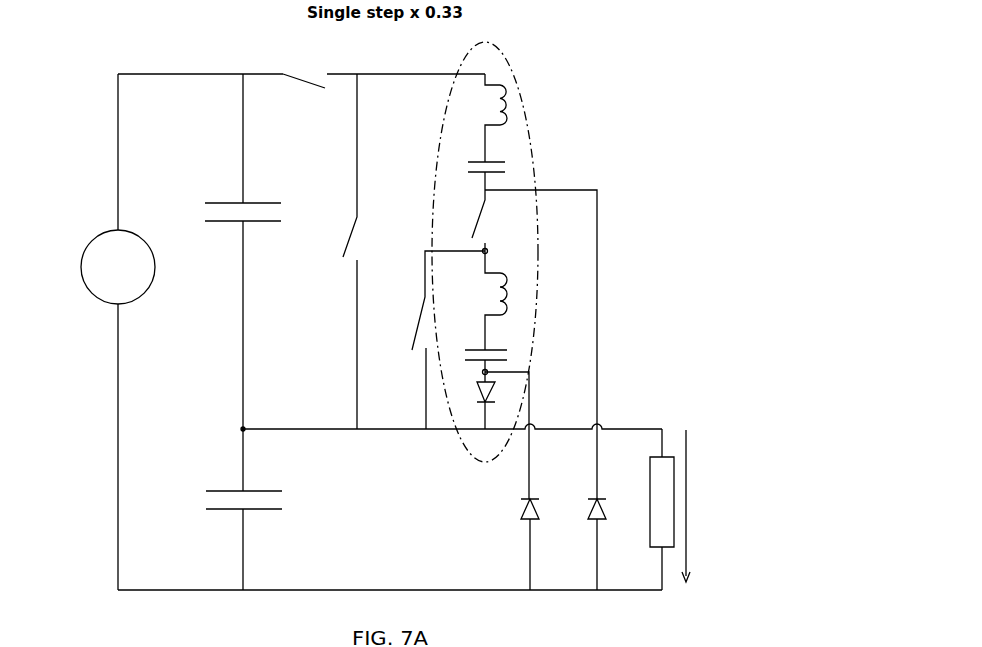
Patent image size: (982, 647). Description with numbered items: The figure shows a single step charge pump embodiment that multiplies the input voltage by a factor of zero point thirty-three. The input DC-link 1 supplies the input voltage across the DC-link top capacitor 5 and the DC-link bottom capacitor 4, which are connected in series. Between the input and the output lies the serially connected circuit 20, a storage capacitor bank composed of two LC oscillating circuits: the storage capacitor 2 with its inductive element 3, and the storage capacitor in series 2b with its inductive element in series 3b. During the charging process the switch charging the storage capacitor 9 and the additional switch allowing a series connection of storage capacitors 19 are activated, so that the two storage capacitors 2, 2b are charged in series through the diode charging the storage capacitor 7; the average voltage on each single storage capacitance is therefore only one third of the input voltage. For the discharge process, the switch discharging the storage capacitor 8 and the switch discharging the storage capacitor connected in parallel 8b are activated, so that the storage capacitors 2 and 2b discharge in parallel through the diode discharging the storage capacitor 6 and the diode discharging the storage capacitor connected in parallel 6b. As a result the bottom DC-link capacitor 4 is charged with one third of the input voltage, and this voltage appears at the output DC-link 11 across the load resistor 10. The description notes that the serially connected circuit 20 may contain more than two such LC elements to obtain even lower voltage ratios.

The input DC-link 1 is at (110, 267).
The storage capacitor 2 is at (478, 173).
The storage capacitor in series 2b is at (480, 351).
The inductive element 3 is at (489, 118).
The inductive element in series 3b is at (487, 300).
The DC-link bottom capacitor 4 is at (226, 509).
The DC-link top capacitor 5 is at (224, 251).
The diode discharging the storage capacitor 6 is at (587, 544).
The diode discharging the storage capacitor connected in parallel 6b is at (515, 544).
The diode charging the storage capacitor 7 is at (492, 400).
The switch discharging the storage capacitor 8 is at (344, 251).
The switch discharging the storage capacitor connected in parallel 8b is at (437, 340).
The switch charging the storage capacitor 9 is at (304, 90).
The load resistor 10 is at (651, 509).
The output DC-link voltage 11 is at (694, 492).
The additional switch allowing a series connection of storage capacitors 19 is at (491, 220).
The storage capacitor bank connected in series 20 is at (528, 137).